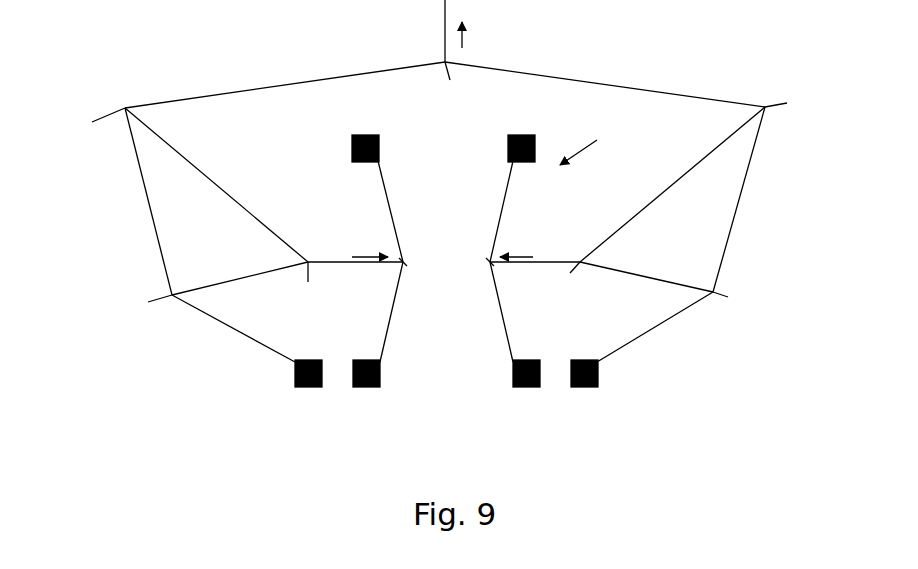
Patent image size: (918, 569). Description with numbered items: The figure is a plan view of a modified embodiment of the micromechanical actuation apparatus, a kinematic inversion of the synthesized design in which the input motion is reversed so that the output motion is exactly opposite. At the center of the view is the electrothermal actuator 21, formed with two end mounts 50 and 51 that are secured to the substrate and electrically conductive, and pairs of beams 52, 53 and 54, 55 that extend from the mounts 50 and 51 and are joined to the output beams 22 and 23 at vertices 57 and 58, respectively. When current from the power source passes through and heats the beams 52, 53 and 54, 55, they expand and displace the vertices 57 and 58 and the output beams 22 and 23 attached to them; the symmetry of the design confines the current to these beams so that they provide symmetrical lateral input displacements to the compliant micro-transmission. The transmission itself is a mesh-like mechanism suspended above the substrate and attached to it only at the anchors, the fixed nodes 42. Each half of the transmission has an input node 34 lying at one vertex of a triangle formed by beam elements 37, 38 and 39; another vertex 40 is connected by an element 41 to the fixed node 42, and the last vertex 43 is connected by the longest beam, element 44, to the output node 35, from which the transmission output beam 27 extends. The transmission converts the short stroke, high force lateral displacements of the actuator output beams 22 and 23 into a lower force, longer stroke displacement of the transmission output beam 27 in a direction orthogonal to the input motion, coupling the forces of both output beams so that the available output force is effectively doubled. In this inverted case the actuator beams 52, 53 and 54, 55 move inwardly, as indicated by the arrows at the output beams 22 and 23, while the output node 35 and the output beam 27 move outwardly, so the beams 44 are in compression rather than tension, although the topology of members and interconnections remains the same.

The actuator 21 is at (594, 139).
The output beam 22 is at (542, 262).
The output beam 23 is at (340, 262).
The transmission output beam 27 is at (442, 16).
The input node 34 is at (441, 288).
The output node 35 is at (465, 83).
The beam element 37 is at (200, 172).
The beam element 38 is at (145, 191).
The beam element 39 is at (232, 280).
The vertex 40 is at (454, 309).
The element 41 is at (222, 325).
The fixed node 42 is at (295, 387).
The vertex 43 is at (449, 113).
The element 44 is at (299, 82).
The end mount 50 is at (365, 133).
The end mount 51 is at (378, 387).
The beam 52 is at (507, 208).
The beam 53 is at (502, 310).
The beam 54 is at (388, 192).
The beam 55 is at (387, 332).
The vertex 57 is at (490, 262).
The vertex 58 is at (405, 258).